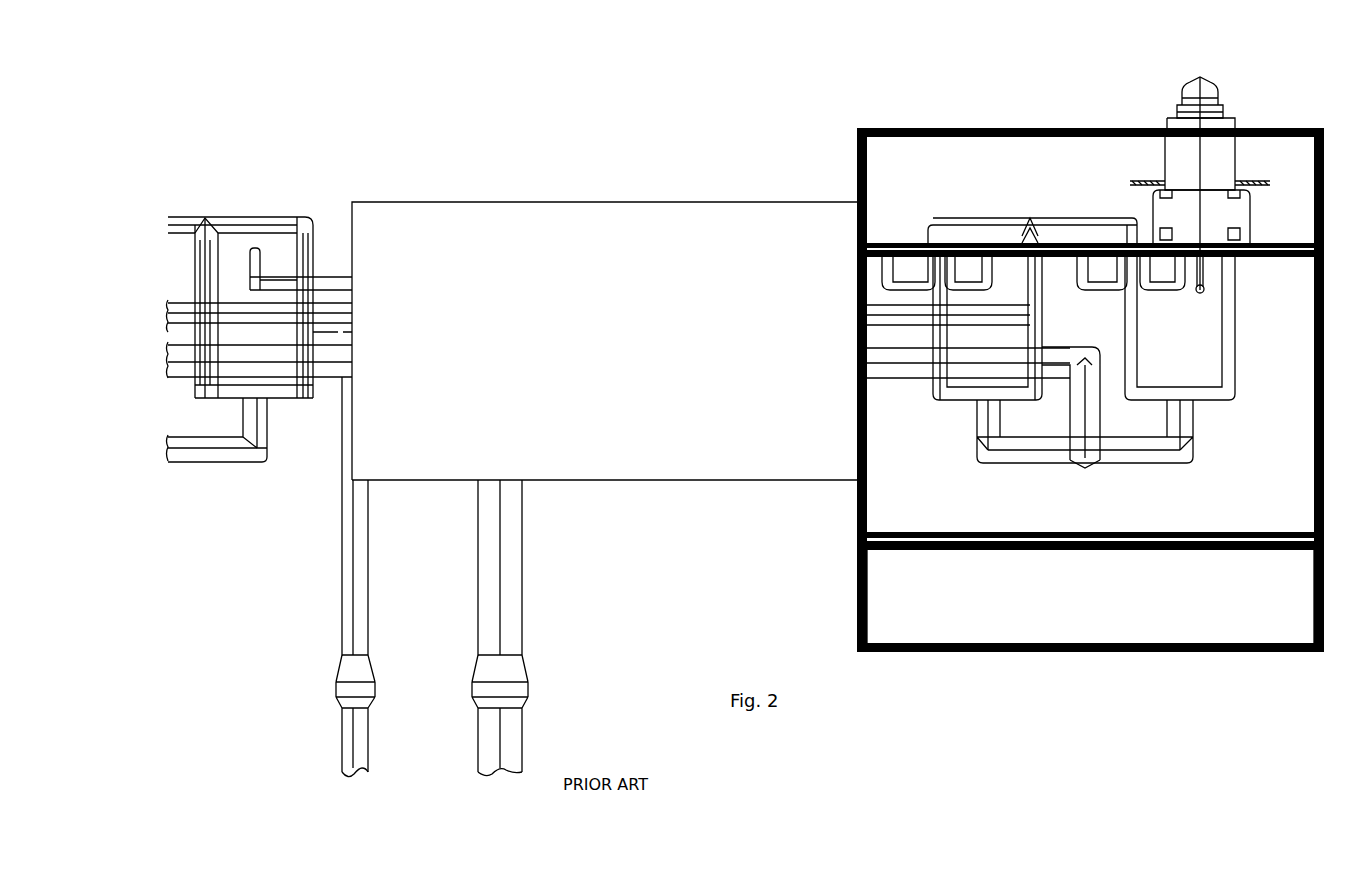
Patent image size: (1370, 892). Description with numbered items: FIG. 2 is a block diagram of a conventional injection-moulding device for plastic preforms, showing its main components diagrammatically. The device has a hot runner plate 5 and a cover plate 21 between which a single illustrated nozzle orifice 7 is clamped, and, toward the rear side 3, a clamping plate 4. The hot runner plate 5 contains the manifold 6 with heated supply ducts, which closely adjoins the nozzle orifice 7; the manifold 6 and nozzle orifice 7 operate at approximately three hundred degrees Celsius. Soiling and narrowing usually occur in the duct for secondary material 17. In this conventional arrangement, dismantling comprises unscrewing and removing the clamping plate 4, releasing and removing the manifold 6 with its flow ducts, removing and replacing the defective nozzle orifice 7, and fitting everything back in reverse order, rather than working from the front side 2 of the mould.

The front side 2 is at (889, 128).
The upper chamber 21 is at (857, 163).
The nozzle orifice 7 is at (1238, 90).
The duct for secondary material 17 is at (1078, 268).
The manifold 6 is at (1250, 472).
The hot runner plate 5 is at (858, 517).
The clamping plate 4 is at (860, 600).
The rear side 3 is at (880, 652).